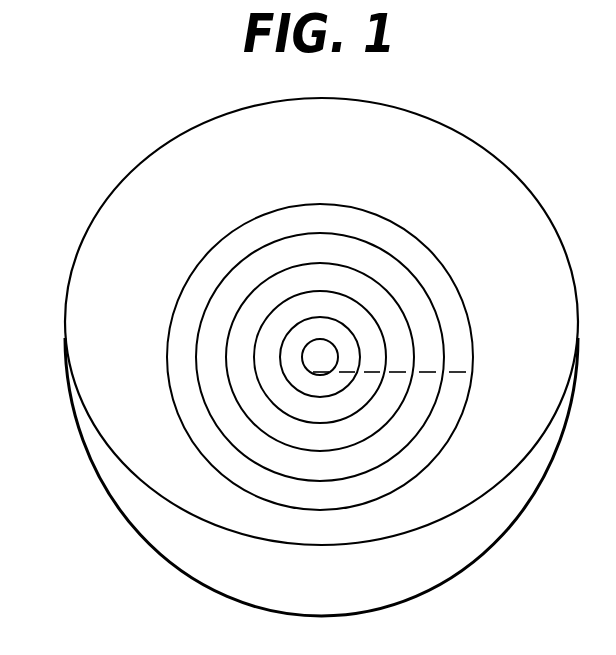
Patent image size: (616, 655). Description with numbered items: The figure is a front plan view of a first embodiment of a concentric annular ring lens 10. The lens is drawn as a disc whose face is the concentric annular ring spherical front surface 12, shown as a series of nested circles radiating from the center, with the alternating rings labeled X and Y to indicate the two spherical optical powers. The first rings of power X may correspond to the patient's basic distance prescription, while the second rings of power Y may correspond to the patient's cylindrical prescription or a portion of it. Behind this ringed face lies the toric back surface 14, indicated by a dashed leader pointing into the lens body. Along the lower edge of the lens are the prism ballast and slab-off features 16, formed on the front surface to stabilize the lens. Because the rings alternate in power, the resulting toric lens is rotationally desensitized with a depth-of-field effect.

The concentric annular ring lens 10 is at (122, 137).
The concentric annular ring spherical front surface 12 is at (111, 258).
The toric back surface 14 is at (391, 156).
The prism ballast and slab-off features 16 is at (321, 477).